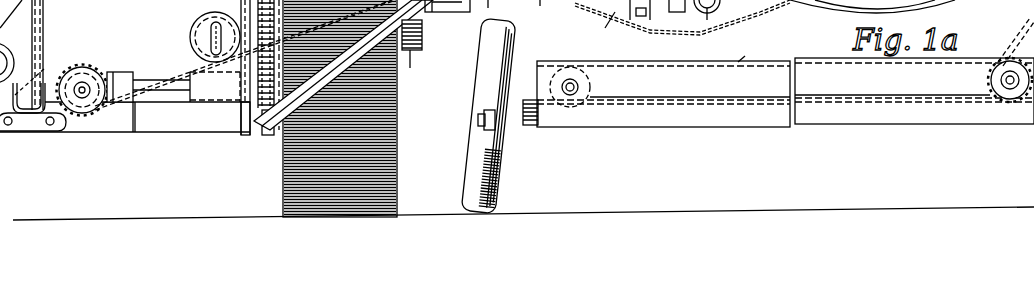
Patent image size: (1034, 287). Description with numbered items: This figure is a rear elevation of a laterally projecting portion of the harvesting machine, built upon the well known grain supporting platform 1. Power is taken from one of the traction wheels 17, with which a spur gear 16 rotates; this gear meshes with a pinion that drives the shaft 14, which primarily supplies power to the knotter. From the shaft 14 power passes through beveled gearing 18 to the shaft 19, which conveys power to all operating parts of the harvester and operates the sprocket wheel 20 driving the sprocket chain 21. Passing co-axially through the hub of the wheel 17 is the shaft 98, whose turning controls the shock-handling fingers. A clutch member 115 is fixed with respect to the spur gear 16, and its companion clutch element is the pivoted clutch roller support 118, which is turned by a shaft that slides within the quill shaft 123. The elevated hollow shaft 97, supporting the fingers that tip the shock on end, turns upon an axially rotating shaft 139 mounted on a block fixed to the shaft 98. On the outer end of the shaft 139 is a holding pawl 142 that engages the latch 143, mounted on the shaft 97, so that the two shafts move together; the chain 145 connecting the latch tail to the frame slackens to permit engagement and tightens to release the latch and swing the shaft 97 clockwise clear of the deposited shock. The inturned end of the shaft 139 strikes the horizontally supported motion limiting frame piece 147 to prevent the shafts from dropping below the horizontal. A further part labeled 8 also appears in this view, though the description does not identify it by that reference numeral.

The grain supporting platform 1 is at (200, 122).
The shaft 8 is at (743, 50).
The shaft 14 is at (165, 70).
The spur gear 16 is at (265, 137).
The traction wheel 17 is at (395, 145).
The beveled gearing 18 is at (112, 70).
The shaft 19 is at (80, 86).
The sprocket wheel 20 is at (84, 84).
The sprocket chain 21 is at (137, 106).
The shaft 97 is at (730, 5).
The shaft 98 is at (536, 8).
The clutch member 115 is at (420, 55).
The clutch roller support 118 is at (497, 8).
The quill shaft 123 is at (425, 38).
The axially rotating shaft 139 is at (745, 30).
The holding pawl 142 is at (690, 55).
The latch 143 is at (656, 14).
The chain 145 is at (586, 0).
The motion limiting frame piece 147 is at (620, 45).